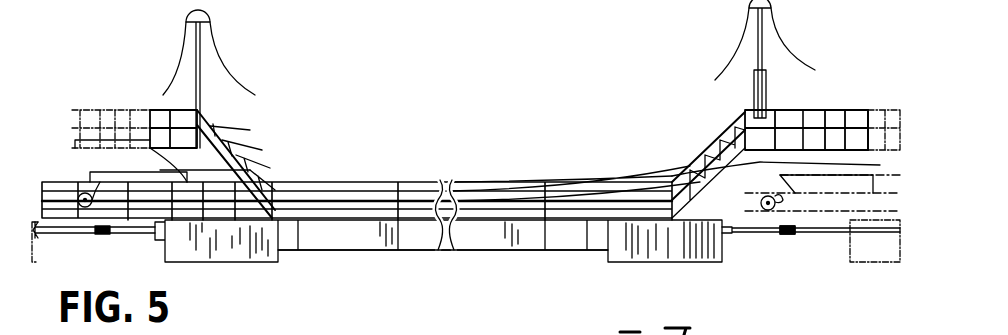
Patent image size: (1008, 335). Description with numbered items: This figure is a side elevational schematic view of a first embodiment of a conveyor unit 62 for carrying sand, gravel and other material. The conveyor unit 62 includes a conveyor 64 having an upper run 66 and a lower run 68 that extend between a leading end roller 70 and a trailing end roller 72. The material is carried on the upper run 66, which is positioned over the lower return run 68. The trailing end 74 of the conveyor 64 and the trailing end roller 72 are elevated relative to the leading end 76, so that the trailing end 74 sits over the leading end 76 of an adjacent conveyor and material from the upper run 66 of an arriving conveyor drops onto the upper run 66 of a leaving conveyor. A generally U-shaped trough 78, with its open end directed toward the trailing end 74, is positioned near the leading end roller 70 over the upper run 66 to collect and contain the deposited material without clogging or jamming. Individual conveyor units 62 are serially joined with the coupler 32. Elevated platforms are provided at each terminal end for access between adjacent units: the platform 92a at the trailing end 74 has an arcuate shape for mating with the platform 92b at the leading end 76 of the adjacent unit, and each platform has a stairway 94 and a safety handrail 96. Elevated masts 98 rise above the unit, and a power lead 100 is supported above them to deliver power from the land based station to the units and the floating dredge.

The coupler 32 is at (97, 242).
The conveyor unit 62 is at (372, 282).
The conveyor 64 is at (652, 174).
The upper run 66 is at (362, 182).
The lower run 68 is at (360, 222).
The leading end roller 70 is at (85, 193).
The trailing end roller 72 is at (100, 142).
The trailing end 74 is at (775, 134).
The leading end 76 is at (97, 198).
The U-shaped trough 78 is at (172, 170).
The platform 92a is at (82, 118).
The platform 92b is at (194, 102).
The stairway 94 is at (240, 172).
The safety handrail 96 is at (226, 142).
The mast 98 is at (193, 42).
The power lead 100 is at (225, 66).